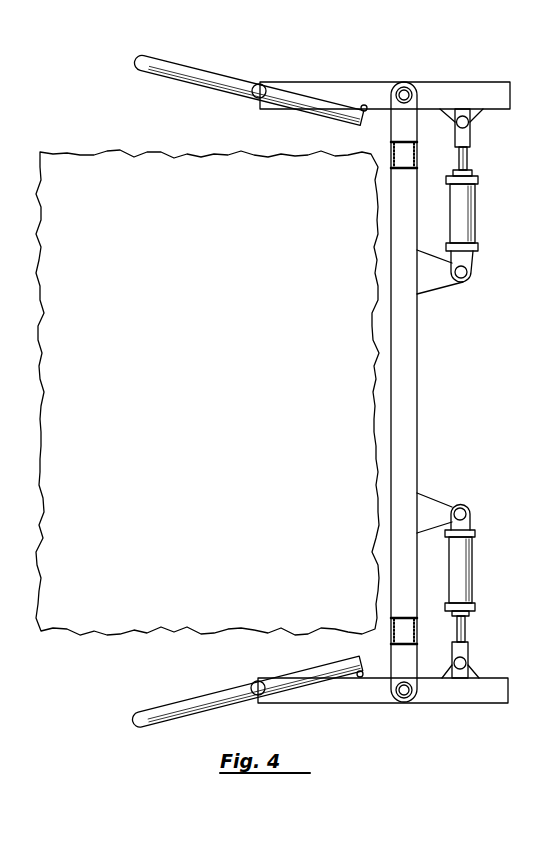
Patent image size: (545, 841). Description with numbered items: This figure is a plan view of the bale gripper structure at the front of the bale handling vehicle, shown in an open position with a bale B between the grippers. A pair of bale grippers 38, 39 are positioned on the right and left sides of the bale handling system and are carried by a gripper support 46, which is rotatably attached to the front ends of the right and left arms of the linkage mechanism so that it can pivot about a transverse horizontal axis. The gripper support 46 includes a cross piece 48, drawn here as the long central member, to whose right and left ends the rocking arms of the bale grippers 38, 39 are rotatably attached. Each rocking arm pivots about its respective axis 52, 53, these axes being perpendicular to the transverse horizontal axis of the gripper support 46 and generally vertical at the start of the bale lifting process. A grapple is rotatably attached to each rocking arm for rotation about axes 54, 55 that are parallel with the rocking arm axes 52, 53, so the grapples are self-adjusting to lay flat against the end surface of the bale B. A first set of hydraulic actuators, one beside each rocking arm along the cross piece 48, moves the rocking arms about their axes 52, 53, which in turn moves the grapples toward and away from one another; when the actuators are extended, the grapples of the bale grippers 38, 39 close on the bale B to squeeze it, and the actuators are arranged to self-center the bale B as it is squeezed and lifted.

The bale gripper 38 is at (328, 721).
The bale gripper 39 is at (322, 81).
The gripper support 46 is at (442, 400).
The cross piece 48 is at (405, 383).
The axis 52 is at (404, 698).
The axis 53 is at (410, 88).
The axis 54 is at (256, 681).
The axis 55 is at (254, 98).
The bale B is at (128, 606).